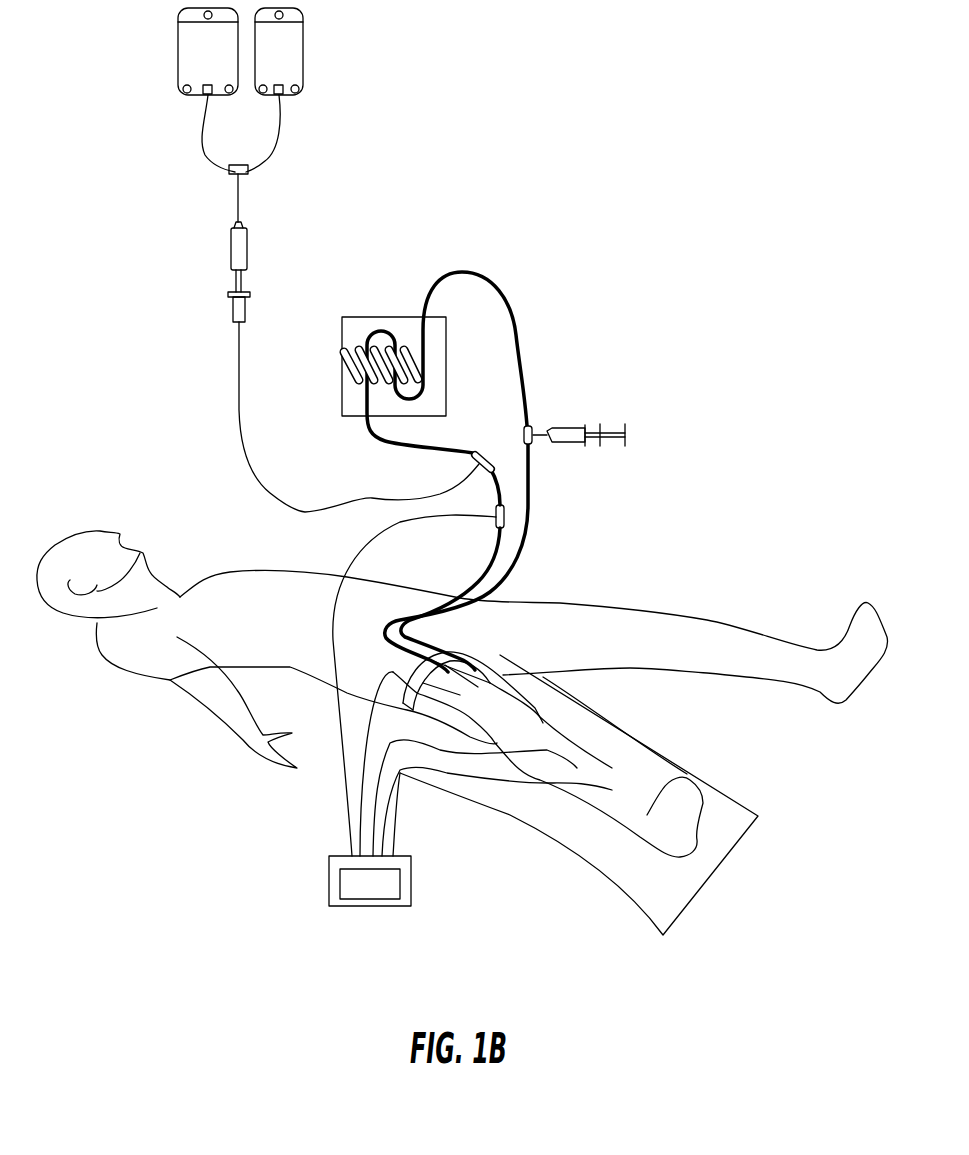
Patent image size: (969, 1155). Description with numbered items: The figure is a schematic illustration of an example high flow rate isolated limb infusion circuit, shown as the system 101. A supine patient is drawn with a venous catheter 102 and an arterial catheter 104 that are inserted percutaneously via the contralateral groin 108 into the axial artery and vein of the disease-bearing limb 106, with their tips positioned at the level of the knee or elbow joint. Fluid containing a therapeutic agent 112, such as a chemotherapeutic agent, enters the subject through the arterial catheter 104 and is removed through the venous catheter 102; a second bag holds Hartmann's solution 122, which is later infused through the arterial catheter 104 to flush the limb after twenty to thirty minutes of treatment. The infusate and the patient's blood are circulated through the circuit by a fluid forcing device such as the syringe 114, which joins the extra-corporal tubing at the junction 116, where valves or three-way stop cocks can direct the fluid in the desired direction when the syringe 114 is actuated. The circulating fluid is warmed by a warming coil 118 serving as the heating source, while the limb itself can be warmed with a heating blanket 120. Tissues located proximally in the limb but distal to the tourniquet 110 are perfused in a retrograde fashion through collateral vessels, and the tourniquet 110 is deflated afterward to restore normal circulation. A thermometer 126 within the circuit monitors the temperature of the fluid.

The system 101 is at (584, 134).
The venous catheter 102 is at (513, 328).
The arterial catheter 104 is at (503, 537).
The disease-bearing limb 106 is at (540, 737).
The contralateral groin 108 is at (410, 597).
The tourniquet 110 is at (457, 655).
The therapeutic agent 112 is at (197, 66).
The syringe 114 is at (580, 430).
The junction of the syringe and the extra-corporal circuit 116 is at (531, 428).
The warming coil 118 is at (367, 333).
The heating blanket 120 is at (727, 818).
The Hartmann's solution 122 is at (292, 42).
The thermometer 126 is at (376, 907).